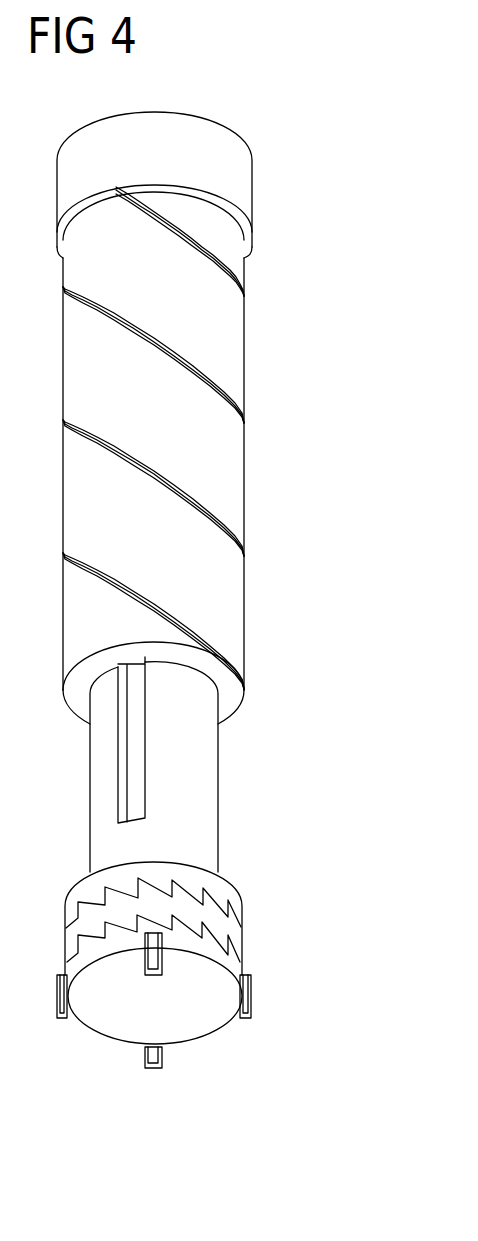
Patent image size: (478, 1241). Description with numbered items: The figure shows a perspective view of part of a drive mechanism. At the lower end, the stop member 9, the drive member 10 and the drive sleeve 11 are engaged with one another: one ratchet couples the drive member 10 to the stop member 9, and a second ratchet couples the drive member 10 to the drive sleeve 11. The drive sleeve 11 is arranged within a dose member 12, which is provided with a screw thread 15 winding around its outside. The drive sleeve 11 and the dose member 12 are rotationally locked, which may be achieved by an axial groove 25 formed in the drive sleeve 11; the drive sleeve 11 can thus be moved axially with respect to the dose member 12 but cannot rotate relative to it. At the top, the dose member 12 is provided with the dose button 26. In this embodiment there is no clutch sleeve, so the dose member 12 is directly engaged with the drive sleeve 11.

The dose button 26 is at (212, 142).
The dose member 12 is at (230, 480).
The screw thread 15 is at (155, 470).
The drive sleeve 11 is at (202, 798).
The axial groove 25 is at (135, 757).
The drive member 10 is at (235, 942).
The stop member 9 is at (235, 965).